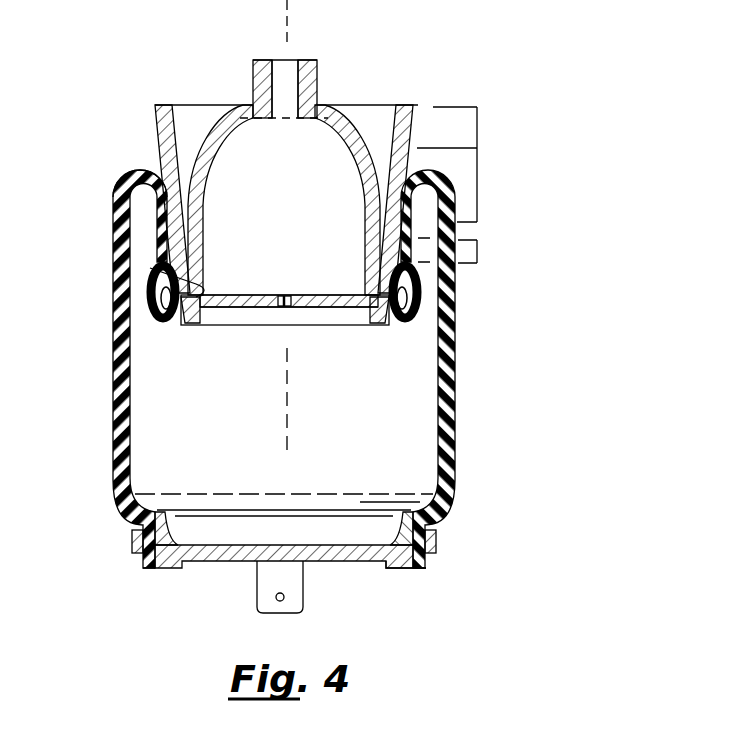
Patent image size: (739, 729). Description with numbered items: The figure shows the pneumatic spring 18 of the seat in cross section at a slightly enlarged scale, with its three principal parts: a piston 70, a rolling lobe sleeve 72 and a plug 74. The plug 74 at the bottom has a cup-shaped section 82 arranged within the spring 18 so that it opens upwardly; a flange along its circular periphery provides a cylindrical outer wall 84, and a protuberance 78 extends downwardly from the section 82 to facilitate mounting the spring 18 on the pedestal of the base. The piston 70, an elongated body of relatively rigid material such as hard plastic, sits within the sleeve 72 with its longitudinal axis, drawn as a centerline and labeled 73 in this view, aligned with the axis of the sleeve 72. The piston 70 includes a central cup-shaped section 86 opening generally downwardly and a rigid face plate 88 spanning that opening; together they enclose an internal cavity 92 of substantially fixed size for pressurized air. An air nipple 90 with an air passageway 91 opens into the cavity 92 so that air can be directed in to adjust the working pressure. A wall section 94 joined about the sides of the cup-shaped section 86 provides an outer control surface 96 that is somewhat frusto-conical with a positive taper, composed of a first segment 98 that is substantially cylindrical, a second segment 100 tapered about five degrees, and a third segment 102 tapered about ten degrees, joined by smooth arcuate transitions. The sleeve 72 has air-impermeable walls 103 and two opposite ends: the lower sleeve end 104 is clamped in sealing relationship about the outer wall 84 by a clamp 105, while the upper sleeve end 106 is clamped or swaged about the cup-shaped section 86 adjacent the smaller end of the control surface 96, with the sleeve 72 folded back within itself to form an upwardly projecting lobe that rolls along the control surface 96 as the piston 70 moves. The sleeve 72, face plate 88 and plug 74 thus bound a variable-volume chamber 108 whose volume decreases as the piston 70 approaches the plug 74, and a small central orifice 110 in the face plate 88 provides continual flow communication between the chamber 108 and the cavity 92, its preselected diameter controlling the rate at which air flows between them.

The pneumatic spring 18 is at (334, 315).
The piston 70 is at (173, 158).
The rolling lobe sleeve 72 is at (114, 367).
The central axis 73 is at (292, 33).
The plug 74 is at (207, 568).
The protuberance 78 is at (305, 596).
The cup-shaped section 82 is at (160, 262).
The cylindrical outer wall 84 is at (137, 528).
The cup-shaped section 86 is at (383, 107).
The face plate 88 is at (240, 307).
The air nipple 90 is at (318, 78).
The air passageway 91 is at (268, 77).
The internal cavity 92 is at (305, 223).
The wall section 94 is at (118, 185).
The control surface 96 is at (163, 122).
The first segment 98 is at (477, 252).
The second segment 100 is at (477, 192).
The third segment 102 is at (477, 130).
The air-impermeable walls 103 is at (114, 440).
The sleeve end 104 is at (420, 572).
The clamp 105 is at (445, 541).
The sleeve end 106 is at (426, 298).
The variable-volume chamber 108 is at (342, 428).
The orifice 110 is at (300, 303).